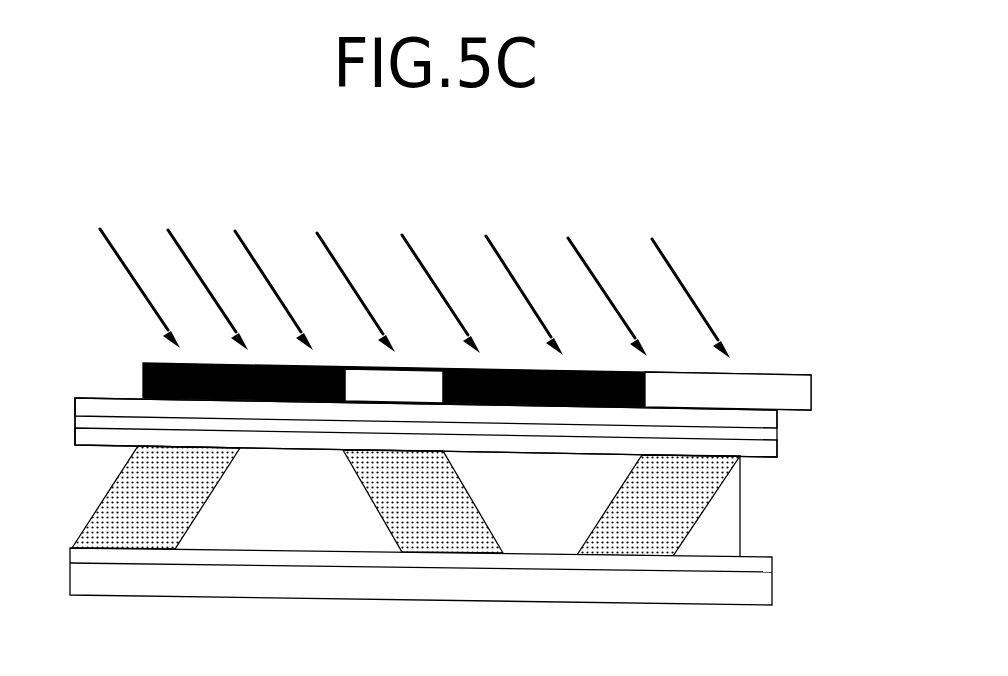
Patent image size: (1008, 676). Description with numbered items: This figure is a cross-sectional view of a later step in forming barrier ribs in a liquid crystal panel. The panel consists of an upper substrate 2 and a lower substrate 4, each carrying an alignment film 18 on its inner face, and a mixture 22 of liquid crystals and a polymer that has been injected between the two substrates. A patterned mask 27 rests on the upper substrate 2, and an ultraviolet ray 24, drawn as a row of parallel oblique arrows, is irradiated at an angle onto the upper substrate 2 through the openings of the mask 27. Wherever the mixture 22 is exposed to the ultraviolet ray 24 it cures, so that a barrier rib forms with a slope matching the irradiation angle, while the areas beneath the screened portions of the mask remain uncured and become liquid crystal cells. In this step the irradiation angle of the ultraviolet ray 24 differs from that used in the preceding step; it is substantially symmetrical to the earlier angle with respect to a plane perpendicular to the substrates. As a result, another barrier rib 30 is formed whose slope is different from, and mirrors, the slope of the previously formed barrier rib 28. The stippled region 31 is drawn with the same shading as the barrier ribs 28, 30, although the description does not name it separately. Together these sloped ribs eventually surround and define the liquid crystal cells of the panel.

The ultraviolet ray 24 is at (134, 283).
The photomask 27 is at (795, 392).
The upper substrate 2 is at (777, 428).
The alignment film 18 is at (777, 455).
The mixture 22 is at (458, 547).
The lower substrate 4 is at (772, 592).
The first alignment region 31 is at (305, 546).
The barrier rib 30 is at (420, 548).
The barrier rib 28 is at (633, 547).